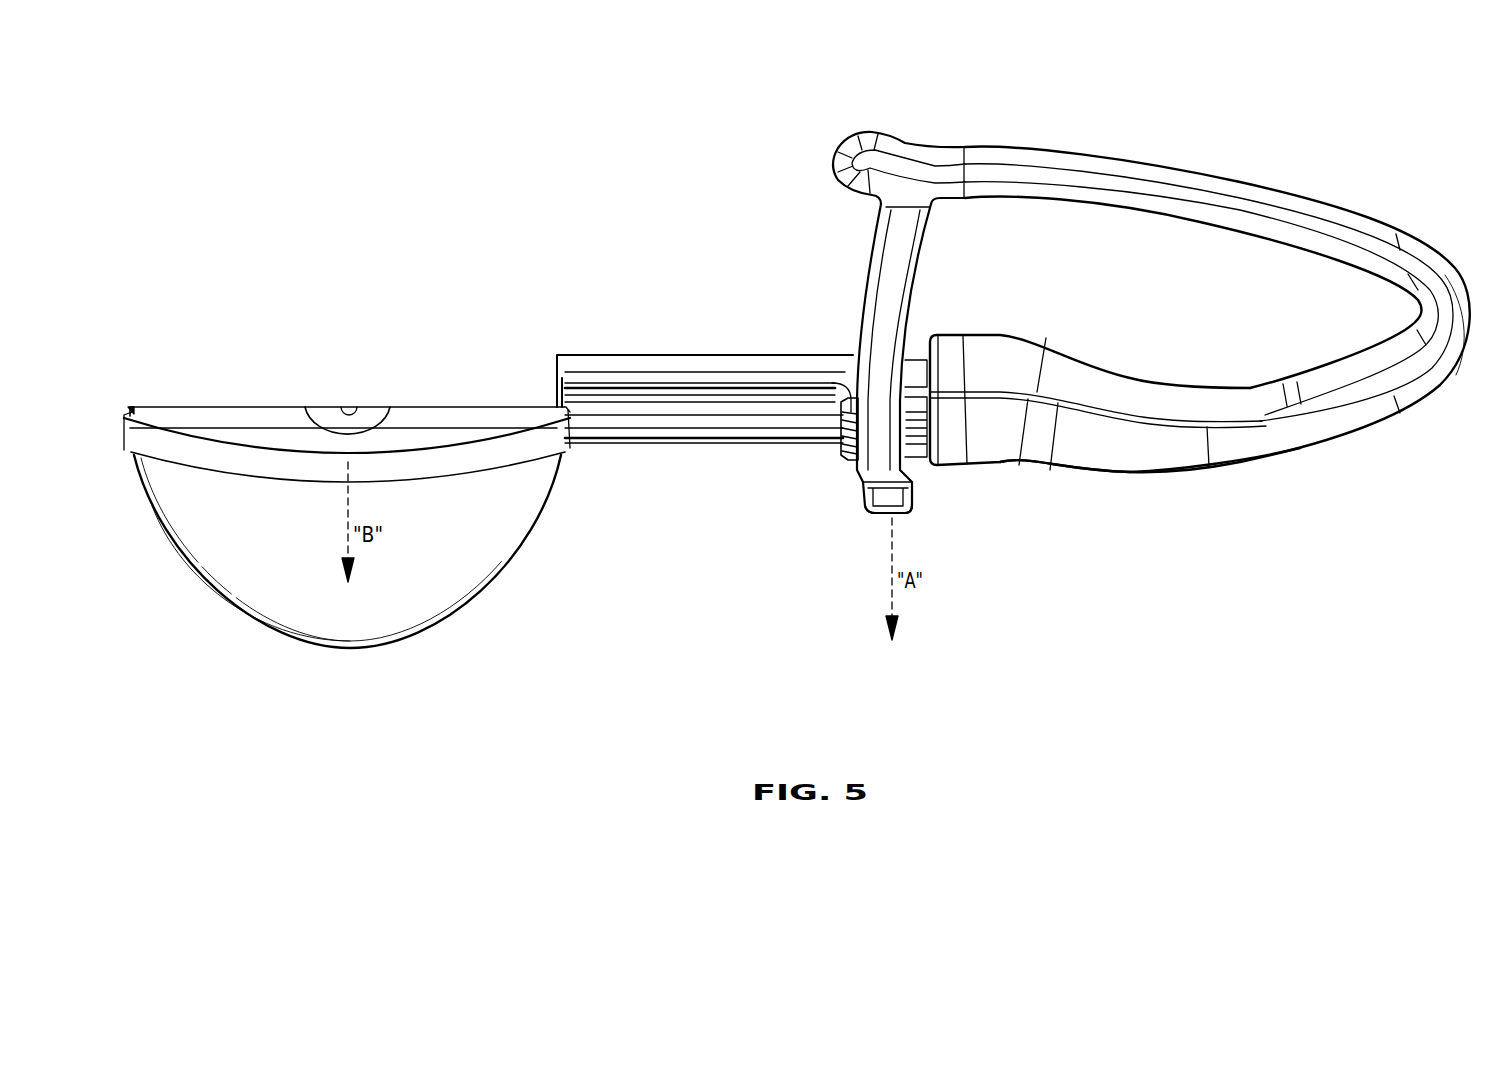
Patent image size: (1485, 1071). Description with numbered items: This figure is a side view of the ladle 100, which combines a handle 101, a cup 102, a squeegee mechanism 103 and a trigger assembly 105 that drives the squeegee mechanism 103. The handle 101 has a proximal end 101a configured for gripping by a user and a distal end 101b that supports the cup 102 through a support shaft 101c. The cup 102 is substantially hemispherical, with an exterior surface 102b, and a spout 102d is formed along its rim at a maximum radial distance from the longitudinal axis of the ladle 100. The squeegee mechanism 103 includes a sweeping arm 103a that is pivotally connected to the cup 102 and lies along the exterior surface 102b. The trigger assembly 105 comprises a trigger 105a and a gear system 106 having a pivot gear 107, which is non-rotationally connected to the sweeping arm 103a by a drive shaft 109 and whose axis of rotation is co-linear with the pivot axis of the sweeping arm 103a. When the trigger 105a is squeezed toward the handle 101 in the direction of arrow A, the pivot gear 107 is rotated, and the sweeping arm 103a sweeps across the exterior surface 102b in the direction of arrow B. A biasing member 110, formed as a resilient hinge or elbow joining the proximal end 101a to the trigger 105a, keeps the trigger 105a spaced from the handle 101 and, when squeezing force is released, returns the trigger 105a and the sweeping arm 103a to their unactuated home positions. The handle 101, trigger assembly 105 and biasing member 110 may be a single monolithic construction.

The ladle 100 is at (636, 169).
The handle 101 is at (1218, 482).
The proximal end 101a is at (1440, 403).
The distal end 101b is at (1023, 466).
The support shaft 101c is at (625, 373).
The cup 102 is at (273, 643).
The exterior surface 102b is at (193, 550).
The spout 102d is at (323, 420).
The squeegee mechanism 103 is at (683, 518).
The sweeping arm 103a is at (125, 428).
The trigger assembly 105 is at (860, 240).
The trigger 105a is at (911, 147).
The gear system 106 is at (866, 518).
The pivot gear 107 is at (845, 450).
The drive shaft 109 is at (603, 436).
The biasing member 110 is at (1445, 307).